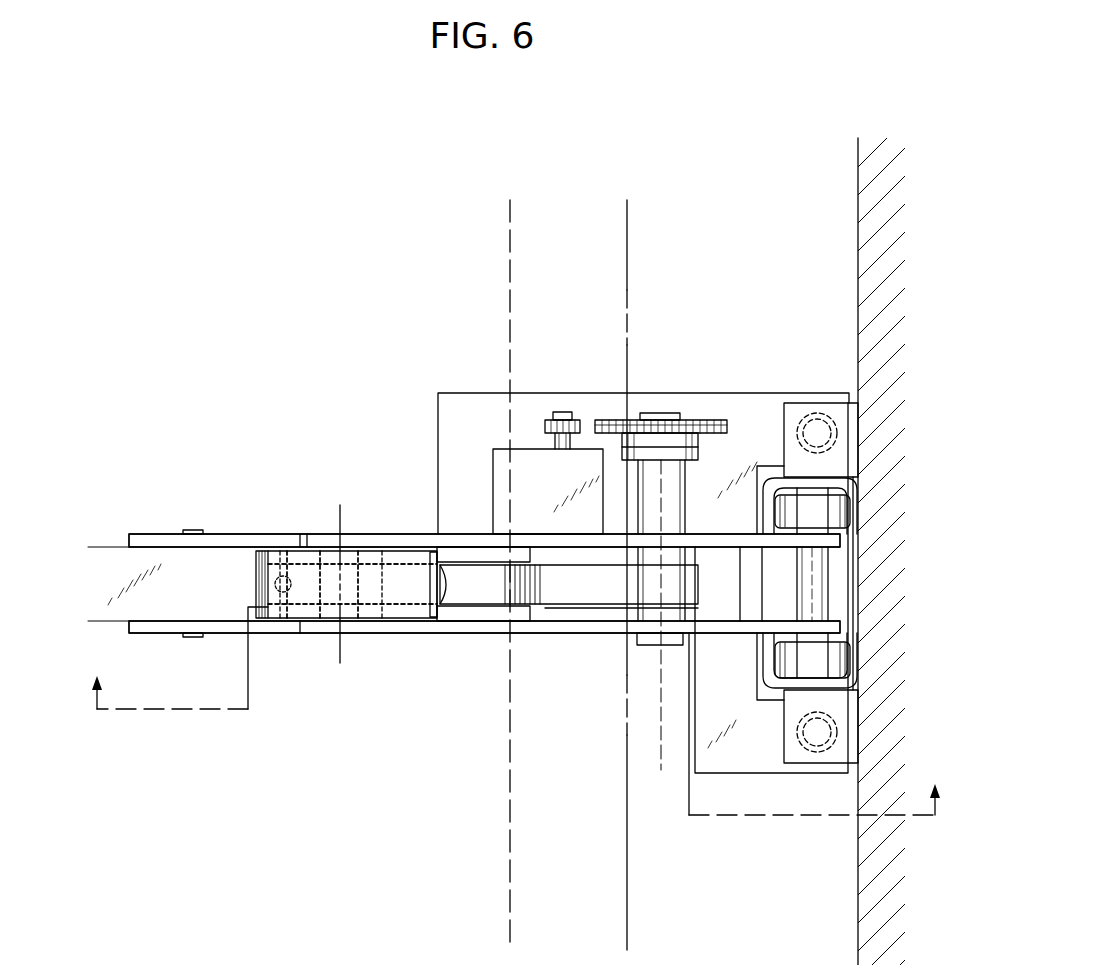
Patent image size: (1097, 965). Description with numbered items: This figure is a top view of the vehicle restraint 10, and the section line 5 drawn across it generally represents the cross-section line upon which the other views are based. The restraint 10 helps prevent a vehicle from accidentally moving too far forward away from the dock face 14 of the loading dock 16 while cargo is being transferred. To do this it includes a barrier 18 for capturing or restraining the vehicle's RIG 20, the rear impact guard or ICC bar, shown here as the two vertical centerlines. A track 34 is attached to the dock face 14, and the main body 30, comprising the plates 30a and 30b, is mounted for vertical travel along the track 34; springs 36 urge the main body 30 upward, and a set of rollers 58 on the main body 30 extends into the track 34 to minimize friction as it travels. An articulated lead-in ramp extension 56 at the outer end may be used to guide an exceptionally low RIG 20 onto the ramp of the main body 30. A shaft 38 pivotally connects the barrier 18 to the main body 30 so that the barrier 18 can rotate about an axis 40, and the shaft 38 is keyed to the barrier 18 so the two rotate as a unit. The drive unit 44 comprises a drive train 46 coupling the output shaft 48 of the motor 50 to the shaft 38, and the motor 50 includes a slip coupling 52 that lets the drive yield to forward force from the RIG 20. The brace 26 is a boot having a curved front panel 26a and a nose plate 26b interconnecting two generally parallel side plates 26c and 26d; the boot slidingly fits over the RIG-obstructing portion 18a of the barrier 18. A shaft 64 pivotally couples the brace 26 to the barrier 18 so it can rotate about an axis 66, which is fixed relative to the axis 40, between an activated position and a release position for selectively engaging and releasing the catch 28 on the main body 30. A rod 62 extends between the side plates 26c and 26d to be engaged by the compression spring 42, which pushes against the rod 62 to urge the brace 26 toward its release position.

The vehicle restraint 10 is at (282, 362).
The dock face 14 is at (855, 290).
The loading dock 16 is at (726, 916).
The barrier 18 is at (586, 585).
The RIG-obstructing portion 18a is at (450, 583).
The RIG 20 is at (508, 803).
The brace 26 is at (320, 553).
The curved front panel 26a is at (380, 598).
The nose plate 26b is at (390, 600).
The side plate 26c is at (382, 634).
The side plate 26d is at (382, 553).
The catch 28 is at (538, 555).
The main body 30 is at (417, 533).
The plate 30a is at (357, 634).
The plate 30b is at (238, 533).
The track 34 is at (774, 690).
The spring 36 is at (816, 412).
The shaft 38 is at (655, 648).
The axis 40 is at (662, 748).
The compression spring 42 is at (275, 586).
The drive unit 44 is at (595, 345).
The drive train 46 is at (592, 418).
The output shaft 48 is at (563, 412).
The motor 50 is at (492, 471).
The slip coupling 52 is at (700, 453).
The lead-in ramp extension 56 is at (108, 545).
The roller 58 is at (800, 656).
The rod 62 is at (297, 552).
The shaft 64 is at (303, 560).
The axis 66 is at (338, 650).
The cross-section line 5 is at (515, 711).